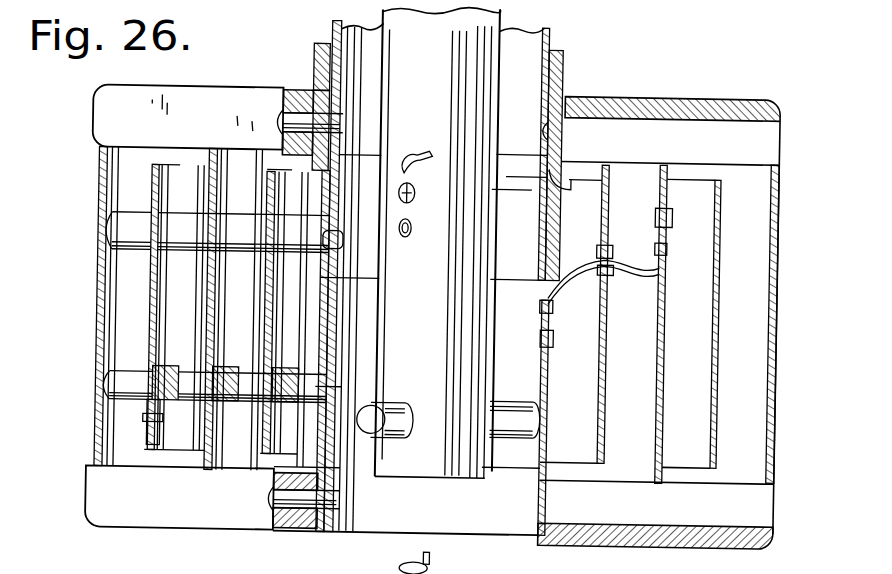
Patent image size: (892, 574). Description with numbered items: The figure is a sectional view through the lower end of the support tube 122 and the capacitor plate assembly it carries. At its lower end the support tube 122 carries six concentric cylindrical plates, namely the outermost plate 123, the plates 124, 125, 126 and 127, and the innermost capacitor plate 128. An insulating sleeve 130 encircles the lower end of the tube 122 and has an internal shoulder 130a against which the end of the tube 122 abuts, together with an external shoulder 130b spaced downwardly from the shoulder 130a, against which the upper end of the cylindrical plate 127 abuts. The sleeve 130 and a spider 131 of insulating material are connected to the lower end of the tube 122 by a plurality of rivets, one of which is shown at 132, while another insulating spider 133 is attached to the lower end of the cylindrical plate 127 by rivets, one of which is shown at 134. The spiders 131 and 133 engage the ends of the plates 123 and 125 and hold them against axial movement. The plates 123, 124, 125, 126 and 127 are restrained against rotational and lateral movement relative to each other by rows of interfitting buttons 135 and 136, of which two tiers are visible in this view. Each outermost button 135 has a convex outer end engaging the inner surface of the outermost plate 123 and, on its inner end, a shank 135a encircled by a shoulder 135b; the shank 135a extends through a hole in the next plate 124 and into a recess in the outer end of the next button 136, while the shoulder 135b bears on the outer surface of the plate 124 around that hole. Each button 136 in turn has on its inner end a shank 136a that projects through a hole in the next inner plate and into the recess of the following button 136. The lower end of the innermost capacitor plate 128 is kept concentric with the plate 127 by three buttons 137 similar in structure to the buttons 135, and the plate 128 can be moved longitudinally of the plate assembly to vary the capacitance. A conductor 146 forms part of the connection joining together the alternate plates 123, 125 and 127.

The support tube 122 is at (550, 29).
The cylindrical plate 123 is at (101, 449).
The cylindrical plate 124 is at (153, 441).
The cylindrical plate 125 is at (199, 445).
The cylindrical plate 126 is at (264, 441).
The cylindrical plate 127 is at (334, 468).
The innermost capacitor plate 128 is at (447, 458).
The insulating sleeve 130 is at (562, 57).
The internal shoulder 130a is at (553, 132).
The external shoulder 130b is at (561, 176).
The spider 131 is at (283, 89).
The rivet 132 is at (301, 88).
The insulating spider 133 is at (643, 537).
The rivet 134 is at (301, 537).
The outermost button 135 is at (134, 243).
The shank 135a is at (153, 421).
The shoulder 135b is at (152, 408).
The button 136 is at (190, 242).
The shank 136a is at (230, 398).
The button 137 is at (519, 436).
The conductor 146 is at (632, 266).